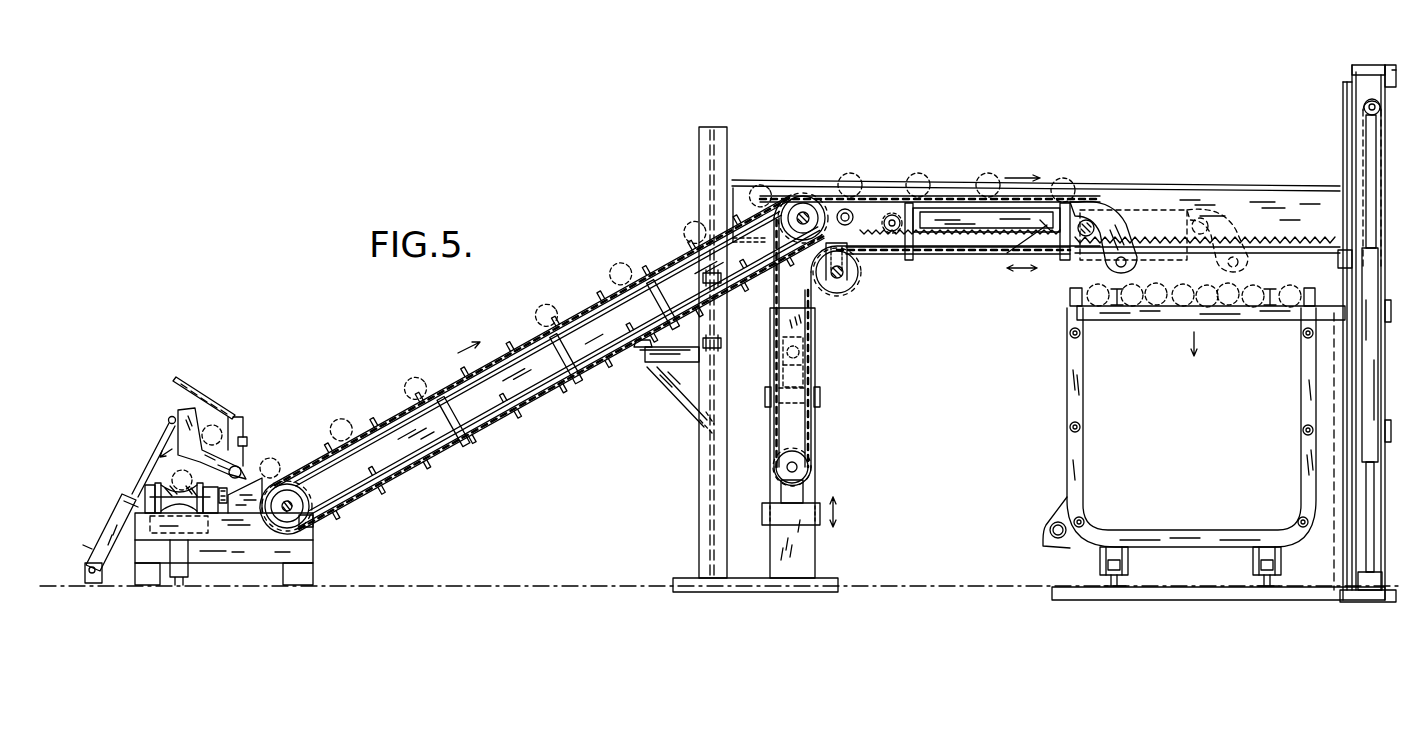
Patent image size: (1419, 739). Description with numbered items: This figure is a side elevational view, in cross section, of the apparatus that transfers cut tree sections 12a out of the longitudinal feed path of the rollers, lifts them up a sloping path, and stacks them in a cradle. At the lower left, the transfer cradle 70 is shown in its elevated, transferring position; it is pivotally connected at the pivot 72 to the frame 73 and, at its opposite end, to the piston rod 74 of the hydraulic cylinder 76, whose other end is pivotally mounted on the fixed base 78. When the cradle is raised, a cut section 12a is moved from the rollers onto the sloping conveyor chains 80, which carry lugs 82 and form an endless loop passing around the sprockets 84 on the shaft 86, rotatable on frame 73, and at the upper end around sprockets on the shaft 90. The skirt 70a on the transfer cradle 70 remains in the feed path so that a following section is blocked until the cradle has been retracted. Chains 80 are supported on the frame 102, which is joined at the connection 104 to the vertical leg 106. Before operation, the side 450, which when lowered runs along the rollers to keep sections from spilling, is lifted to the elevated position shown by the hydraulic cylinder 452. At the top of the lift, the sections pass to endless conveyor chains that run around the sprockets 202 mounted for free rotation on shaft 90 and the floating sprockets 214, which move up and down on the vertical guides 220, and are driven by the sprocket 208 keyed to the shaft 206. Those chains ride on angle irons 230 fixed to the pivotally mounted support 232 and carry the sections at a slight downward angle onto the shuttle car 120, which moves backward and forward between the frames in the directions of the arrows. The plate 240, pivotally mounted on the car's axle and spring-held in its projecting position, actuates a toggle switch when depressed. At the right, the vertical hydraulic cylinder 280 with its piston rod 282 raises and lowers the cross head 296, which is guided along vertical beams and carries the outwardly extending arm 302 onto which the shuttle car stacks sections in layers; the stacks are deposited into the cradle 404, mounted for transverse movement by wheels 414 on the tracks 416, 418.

The cut tree section 12a is at (410, 388).
The transfer cradle 70 is at (181, 432).
The skirt 70a is at (184, 504).
The pivot 72 is at (242, 471).
The frame 73 is at (250, 504).
The piston rod 74 is at (145, 472).
The hydraulic cylinder 76 is at (113, 547).
The fixed base 78 is at (93, 585).
The conveyor chains 80 is at (88, 546).
The lugs 82 is at (472, 369).
The sprockets 84 is at (306, 525).
The shaft 86 is at (296, 509).
The shaft 90 is at (798, 212).
The frame 102 is at (390, 420).
The connection 104 is at (640, 358).
The vertical leg 106 is at (699, 519).
The shuttle car 120 is at (979, 217).
The sprockets 202 is at (806, 208).
The shaft 206 is at (838, 280).
The sprocket 208 is at (855, 288).
The floating sprockets 214 is at (801, 456).
The vertical guides 220 is at (808, 553).
The angle irons 230 is at (856, 200).
The support 232 is at (853, 226).
The plate 240 is at (1114, 246).
The hydraulic cylinder 280 is at (1365, 397).
The piston rod 282 is at (1370, 166).
The cross head 296 is at (1345, 138).
The arm 302 is at (1152, 321).
The cradle 404 is at (1055, 372).
The wheels 414 is at (1117, 552).
The track 416 is at (1265, 590).
The track 418 is at (1115, 590).
The side 450 is at (207, 399).
The hydraulic cylinder 452 is at (248, 446).